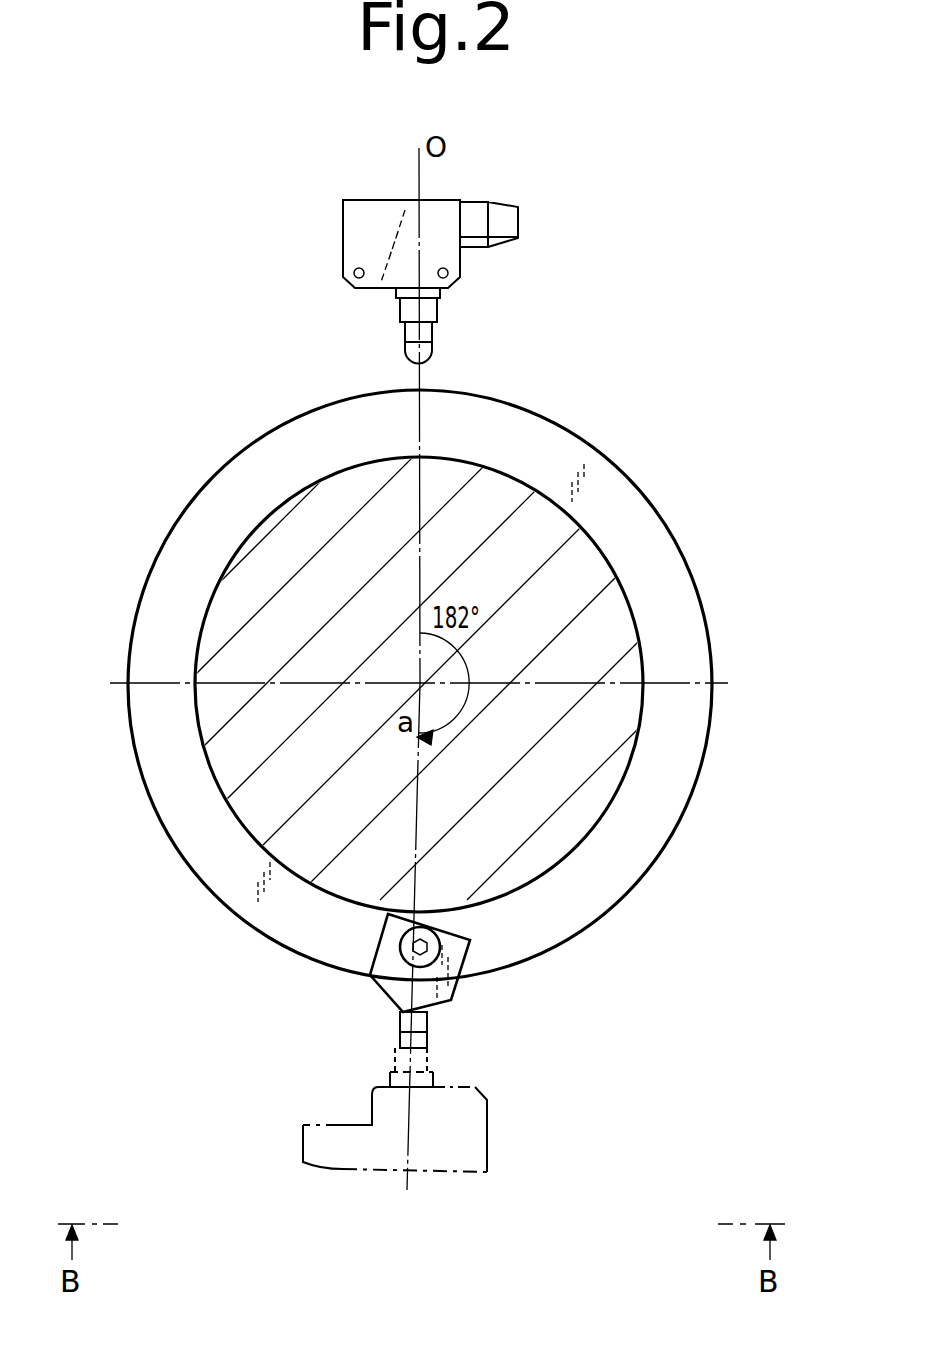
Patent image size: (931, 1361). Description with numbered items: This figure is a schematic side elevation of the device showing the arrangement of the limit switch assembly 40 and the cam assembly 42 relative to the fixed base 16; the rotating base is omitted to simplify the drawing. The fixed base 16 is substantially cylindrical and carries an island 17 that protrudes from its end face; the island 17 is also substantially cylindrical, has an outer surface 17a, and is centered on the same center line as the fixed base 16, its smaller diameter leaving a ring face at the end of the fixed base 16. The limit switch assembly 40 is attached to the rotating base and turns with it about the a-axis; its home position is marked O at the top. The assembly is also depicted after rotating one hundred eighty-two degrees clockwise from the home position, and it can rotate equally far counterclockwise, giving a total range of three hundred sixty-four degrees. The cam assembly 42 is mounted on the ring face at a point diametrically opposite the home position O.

The fixed base 16 is at (648, 500).
The island 17 is at (380, 561).
The outer surface 17a is at (631, 601).
The limit switch assembly 40 is at (330, 220).
The cam assembly 42 is at (369, 993).